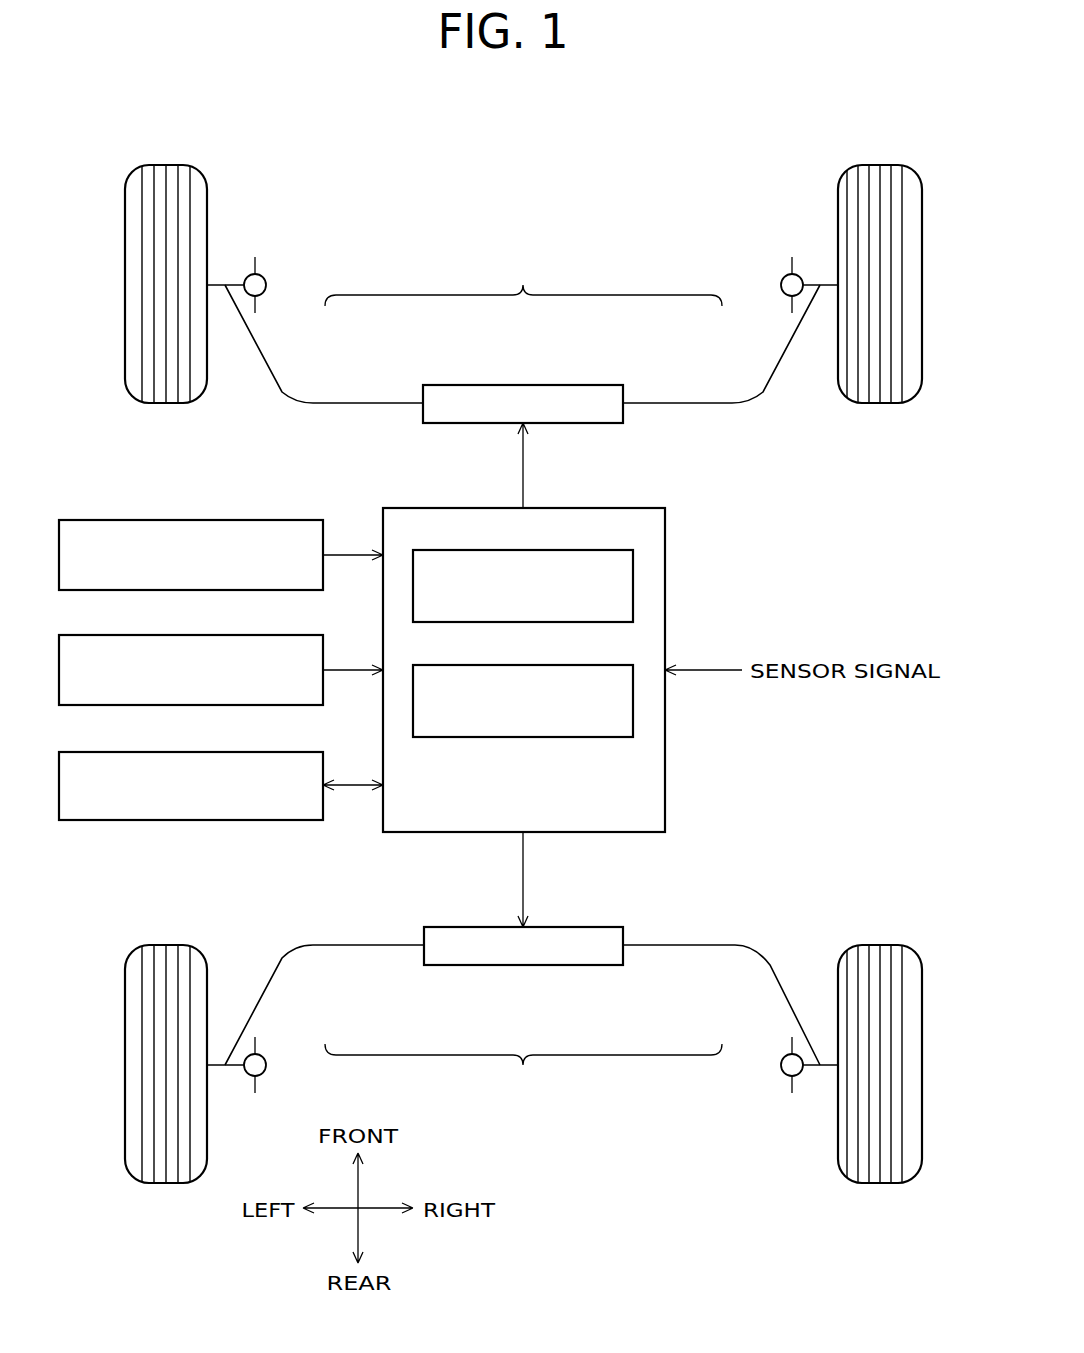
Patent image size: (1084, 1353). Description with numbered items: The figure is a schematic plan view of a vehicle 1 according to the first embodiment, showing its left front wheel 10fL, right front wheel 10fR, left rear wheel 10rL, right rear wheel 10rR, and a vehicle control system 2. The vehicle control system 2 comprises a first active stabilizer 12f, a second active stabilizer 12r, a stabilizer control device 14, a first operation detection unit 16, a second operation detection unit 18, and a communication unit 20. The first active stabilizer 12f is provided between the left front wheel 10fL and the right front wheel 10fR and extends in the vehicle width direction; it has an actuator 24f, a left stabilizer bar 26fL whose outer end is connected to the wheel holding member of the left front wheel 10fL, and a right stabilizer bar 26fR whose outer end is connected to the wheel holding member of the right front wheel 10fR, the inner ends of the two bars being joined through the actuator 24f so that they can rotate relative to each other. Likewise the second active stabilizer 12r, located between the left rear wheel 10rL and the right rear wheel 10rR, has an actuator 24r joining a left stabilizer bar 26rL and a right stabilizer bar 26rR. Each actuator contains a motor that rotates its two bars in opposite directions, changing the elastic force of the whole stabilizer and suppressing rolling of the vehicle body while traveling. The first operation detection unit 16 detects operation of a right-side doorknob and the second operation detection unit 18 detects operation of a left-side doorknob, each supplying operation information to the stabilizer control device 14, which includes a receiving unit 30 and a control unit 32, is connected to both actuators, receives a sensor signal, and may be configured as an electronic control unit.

The vehicle 1 is at (702, 1242).
The vehicle control system 2 is at (830, 757).
The left front wheel 10fL is at (168, 165).
The right front wheel 10fR is at (885, 165).
The left rear wheel 10rL is at (168, 945).
The right rear wheel 10rR is at (885, 945).
The first active stabilizer 12f is at (522, 337).
The second active stabilizer 12r is at (522, 1014).
The stabilizer control device 14 is at (524, 652).
The first operation detection unit 16 is at (285, 520).
The second operation detection unit 18 is at (285, 635).
The communication unit 20 is at (285, 752).
The actuator 24f is at (523, 385).
The actuator 24r is at (521, 965).
The left stabilizer bar 26fL is at (370, 403).
The right stabilizer bar 26fR is at (684, 403).
The left stabilizer bar 26rL is at (370, 945).
The right stabilizer bar 26rR is at (684, 945).
The receiving unit 30 is at (594, 550).
The control unit 32 is at (594, 665).